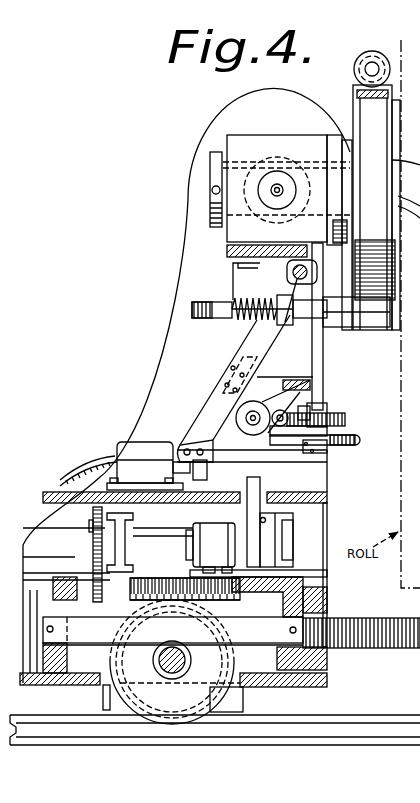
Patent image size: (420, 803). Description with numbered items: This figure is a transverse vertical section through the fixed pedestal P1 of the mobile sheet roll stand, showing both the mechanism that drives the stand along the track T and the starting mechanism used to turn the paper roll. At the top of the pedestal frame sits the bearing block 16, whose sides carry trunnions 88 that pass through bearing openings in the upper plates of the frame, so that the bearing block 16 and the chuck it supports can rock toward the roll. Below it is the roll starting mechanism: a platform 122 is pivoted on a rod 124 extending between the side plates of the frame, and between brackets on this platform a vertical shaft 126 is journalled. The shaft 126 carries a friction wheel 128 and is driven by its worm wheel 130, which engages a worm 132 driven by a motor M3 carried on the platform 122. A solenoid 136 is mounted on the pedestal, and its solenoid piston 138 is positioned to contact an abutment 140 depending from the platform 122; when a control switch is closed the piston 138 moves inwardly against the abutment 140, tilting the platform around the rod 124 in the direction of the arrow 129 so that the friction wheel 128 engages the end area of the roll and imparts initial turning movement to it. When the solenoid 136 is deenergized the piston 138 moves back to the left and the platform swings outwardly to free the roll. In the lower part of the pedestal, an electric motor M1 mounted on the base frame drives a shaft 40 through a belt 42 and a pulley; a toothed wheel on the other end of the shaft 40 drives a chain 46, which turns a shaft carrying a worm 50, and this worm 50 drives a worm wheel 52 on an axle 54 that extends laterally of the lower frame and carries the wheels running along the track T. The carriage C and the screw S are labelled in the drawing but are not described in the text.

The bearing block 16 is at (242, 138).
The trunnions 88 is at (260, 182).
The first or fixed pedestal P1 is at (245, 250).
The rod 124 is at (293, 273).
The worm 132 is at (323, 373).
The vertical shaft 126 is at (320, 393).
The worm wheel 130 is at (327, 412).
The arrow 129 is at (398, 421).
The friction wheel 128 is at (333, 443).
The motor M3 is at (233, 408).
The solenoid 136 is at (132, 443).
The solenoid piston 138 is at (180, 465).
The abutment 140 is at (207, 468).
The platform 122 is at (270, 452).
The shaft 40 is at (150, 523).
The chain 46 is at (93, 555).
The worm 50 is at (163, 573).
The belt 42 is at (257, 550).
The electric motor M1 is at (279, 597).
The carriage C is at (80, 630).
The worm wheel 52 is at (140, 618).
The axle 54 is at (172, 670).
The track T is at (257, 727).
The screw S is at (370, 650).